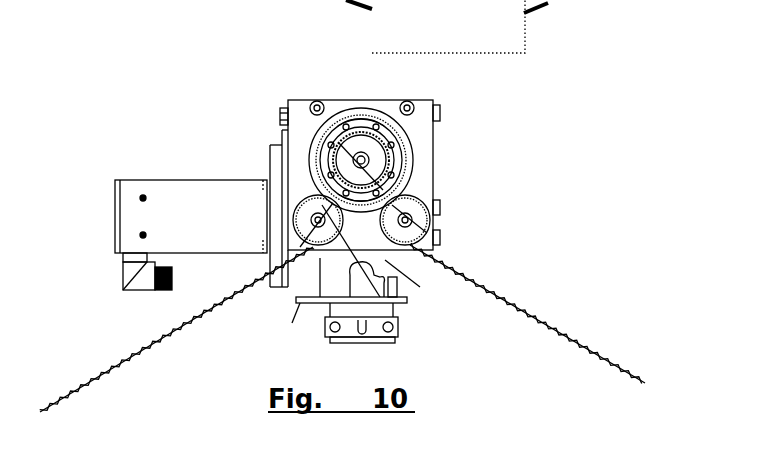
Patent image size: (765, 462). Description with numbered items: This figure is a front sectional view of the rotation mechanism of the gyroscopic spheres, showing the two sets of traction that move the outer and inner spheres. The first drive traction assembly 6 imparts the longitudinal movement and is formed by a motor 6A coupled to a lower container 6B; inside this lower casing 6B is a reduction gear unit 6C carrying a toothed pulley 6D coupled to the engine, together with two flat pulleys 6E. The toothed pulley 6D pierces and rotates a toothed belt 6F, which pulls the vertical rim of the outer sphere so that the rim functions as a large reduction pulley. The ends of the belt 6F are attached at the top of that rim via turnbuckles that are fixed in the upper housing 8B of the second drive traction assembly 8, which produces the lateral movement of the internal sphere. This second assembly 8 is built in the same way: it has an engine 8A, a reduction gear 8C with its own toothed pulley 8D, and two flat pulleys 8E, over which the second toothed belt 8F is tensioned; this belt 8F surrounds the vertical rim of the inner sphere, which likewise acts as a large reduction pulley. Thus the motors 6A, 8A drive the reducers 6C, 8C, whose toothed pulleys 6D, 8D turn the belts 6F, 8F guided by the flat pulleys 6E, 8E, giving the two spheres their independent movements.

The first drive traction assembly 6 is at (463, 138).
The second drive traction assembly 8 is at (475, 193).
The motor 6A is at (140, 183).
The engine 8A is at (130, 213).
The lower container 6B is at (288, 100).
The upper housing 8B is at (333, 100).
The reduction gear unit 6C is at (363, 123).
The reduction gear 8C is at (393, 135).
The toothed pulley 6D is at (320, 130).
The toothed pulley 8D is at (333, 167).
The flat pulleys 6E is at (400, 250).
The flat pulleys 8E is at (445, 270).
The toothed belt 6F is at (535, 317).
The toothed belt 8F is at (602, 357).